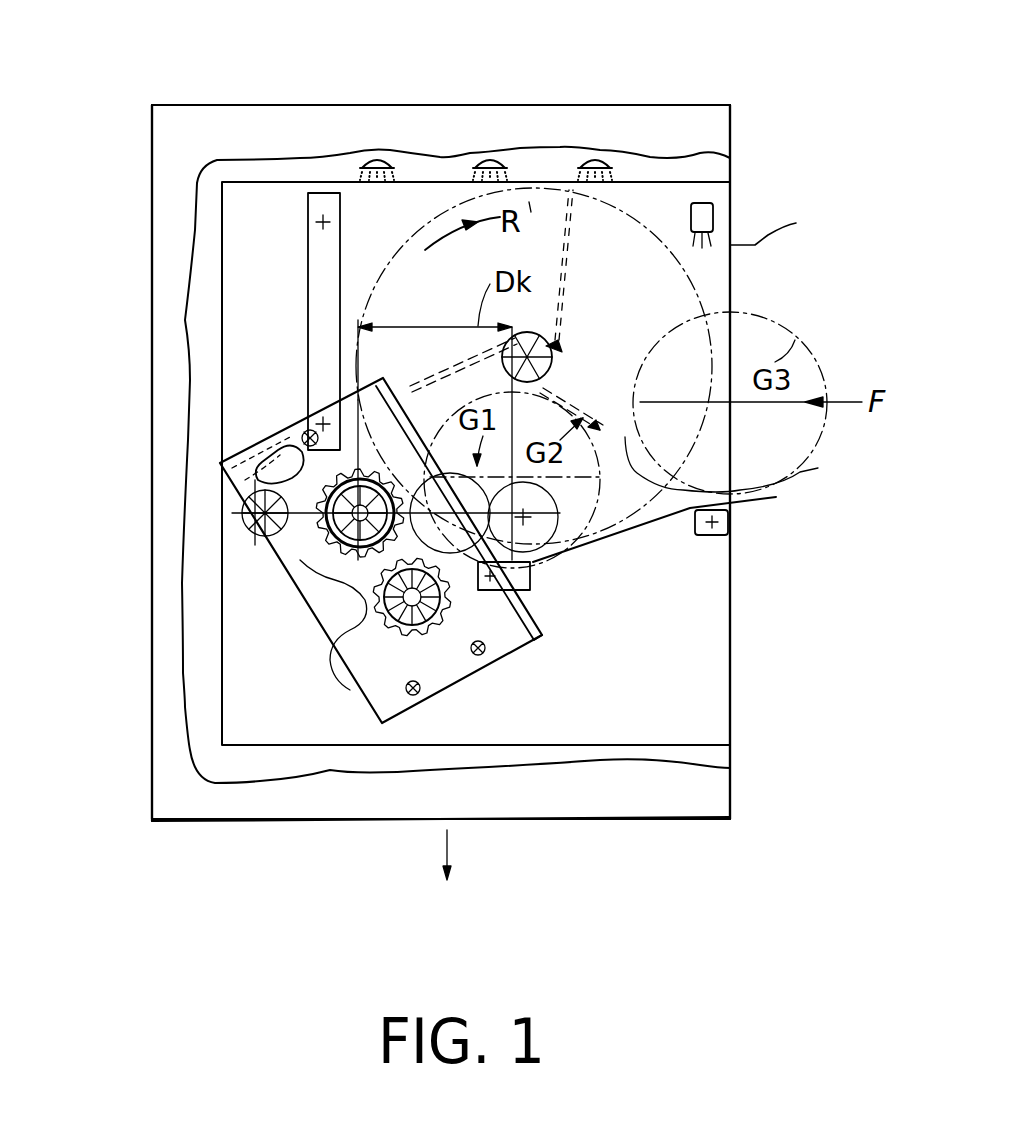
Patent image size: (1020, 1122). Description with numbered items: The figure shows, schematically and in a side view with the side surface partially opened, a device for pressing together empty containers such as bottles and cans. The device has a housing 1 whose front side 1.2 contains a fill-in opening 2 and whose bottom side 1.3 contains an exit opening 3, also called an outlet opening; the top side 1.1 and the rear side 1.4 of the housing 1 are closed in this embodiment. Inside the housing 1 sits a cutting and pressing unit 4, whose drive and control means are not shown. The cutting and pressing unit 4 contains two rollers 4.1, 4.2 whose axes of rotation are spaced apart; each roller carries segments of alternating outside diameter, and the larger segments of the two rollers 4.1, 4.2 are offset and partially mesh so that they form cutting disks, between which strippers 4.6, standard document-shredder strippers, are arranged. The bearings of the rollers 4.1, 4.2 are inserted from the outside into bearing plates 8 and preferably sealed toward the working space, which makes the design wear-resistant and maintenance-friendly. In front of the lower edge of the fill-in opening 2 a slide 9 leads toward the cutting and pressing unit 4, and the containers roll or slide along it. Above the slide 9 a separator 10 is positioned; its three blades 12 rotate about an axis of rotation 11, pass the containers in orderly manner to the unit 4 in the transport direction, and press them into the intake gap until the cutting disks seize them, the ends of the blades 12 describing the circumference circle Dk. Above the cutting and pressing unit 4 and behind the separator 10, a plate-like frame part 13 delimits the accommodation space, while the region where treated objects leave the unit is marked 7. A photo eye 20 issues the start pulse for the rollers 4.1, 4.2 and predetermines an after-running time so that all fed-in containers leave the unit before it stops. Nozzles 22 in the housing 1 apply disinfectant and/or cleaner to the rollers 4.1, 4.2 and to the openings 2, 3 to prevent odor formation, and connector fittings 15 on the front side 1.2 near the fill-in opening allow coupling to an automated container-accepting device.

The housing 1 is at (756, 84).
The top side 1.1 is at (450, 104).
The front side 1.2 is at (730, 138).
The bottom side 1.3 is at (663, 818).
The rear side 1.4 is at (152, 748).
The fill-in opening 2 is at (790, 288).
The exit opening 3 is at (448, 838).
The cutting and pressing unit 4 is at (415, 560).
The roller 4.1 is at (492, 635).
The roller 4.2 is at (242, 445).
The strippers 4.6 is at (283, 540).
The exit region 7 is at (332, 572).
The bearing plates 8 is at (540, 625).
The slide 9 is at (634, 534).
The separator 10 is at (586, 344).
The axis of rotation 11 is at (553, 378).
The blades 12 is at (563, 257).
The plate-like frame part 13 is at (308, 272).
The connector fittings 15 is at (773, 553).
The photo eye 20 is at (713, 218).
The nozzles 22 is at (372, 160).